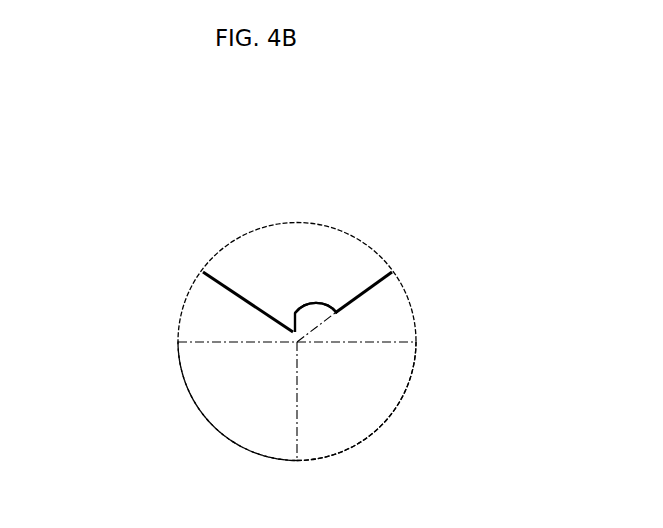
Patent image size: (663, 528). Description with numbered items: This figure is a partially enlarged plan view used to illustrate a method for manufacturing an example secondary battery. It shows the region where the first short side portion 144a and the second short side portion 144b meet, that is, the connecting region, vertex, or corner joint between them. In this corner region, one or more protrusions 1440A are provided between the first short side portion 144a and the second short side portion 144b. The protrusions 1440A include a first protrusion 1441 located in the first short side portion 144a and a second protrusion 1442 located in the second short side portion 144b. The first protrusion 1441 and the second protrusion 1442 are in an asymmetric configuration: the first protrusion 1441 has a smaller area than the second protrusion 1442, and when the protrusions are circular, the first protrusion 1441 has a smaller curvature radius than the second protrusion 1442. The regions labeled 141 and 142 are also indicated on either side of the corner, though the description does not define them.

The protrusions 1440A is at (387, 160).
The first protrusion 1441 is at (293, 330).
The second protrusion 1442 is at (308, 305).
The first short side portion 144a is at (198, 307).
The second short side portion 144b is at (395, 313).
The first region 141 is at (225, 410).
The second region 142 is at (370, 412).